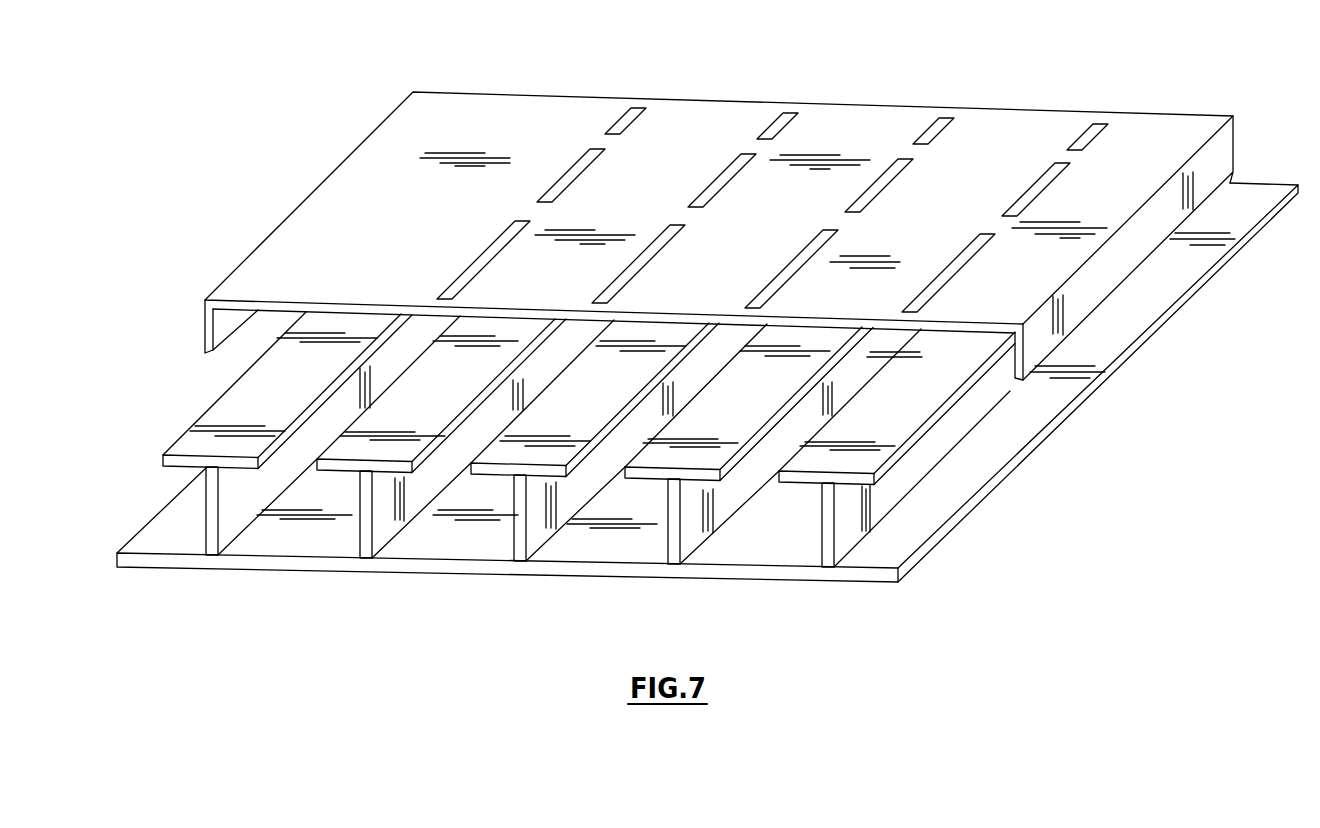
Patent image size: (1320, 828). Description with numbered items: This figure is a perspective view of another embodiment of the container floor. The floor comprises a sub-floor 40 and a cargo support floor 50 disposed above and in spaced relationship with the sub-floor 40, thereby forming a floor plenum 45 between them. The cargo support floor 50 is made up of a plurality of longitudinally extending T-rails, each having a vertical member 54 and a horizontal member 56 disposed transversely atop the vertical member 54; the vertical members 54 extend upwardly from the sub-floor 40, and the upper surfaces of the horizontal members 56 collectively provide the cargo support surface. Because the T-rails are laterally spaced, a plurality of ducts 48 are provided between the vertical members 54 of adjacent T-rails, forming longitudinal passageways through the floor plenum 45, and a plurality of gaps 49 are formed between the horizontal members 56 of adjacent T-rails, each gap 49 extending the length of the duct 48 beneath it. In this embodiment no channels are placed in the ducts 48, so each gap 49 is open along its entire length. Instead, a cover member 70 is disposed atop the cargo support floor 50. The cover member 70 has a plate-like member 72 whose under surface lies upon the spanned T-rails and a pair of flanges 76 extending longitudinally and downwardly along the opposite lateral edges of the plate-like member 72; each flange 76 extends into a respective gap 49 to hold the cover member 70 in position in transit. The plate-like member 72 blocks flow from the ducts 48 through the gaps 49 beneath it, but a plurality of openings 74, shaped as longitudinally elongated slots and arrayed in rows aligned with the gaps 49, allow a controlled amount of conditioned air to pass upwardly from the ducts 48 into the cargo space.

The sub-floor 40 is at (273, 563).
The floor plenum 45 is at (325, 548).
The ducts 48 is at (766, 540).
The gaps 49 is at (780, 444).
The cargo support floor 50 is at (250, 473).
The vertical member 54 is at (817, 523).
The horizontal member 56 is at (693, 486).
The cover member 70 is at (692, 239).
The plate-like member 72 is at (387, 170).
The openings 74 is at (618, 127).
The flanges 76 is at (205, 342).